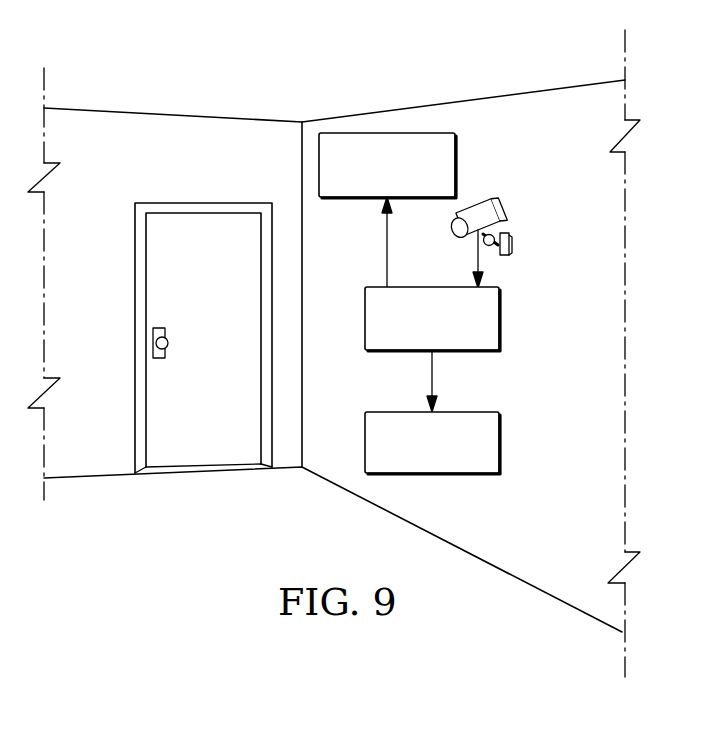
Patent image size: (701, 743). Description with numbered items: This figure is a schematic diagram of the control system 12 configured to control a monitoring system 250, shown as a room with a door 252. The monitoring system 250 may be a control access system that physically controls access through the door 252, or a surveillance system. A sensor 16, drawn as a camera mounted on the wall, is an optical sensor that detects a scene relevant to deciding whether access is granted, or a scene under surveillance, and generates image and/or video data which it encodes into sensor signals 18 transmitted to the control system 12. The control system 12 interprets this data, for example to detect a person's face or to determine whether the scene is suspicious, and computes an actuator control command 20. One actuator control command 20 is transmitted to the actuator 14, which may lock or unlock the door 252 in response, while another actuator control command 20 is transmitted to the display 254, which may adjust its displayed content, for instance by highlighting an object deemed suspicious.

The monitoring system 250 is at (492, 62).
The door 252 is at (234, 383).
The actuator 14 is at (457, 165).
The sensor 16 is at (504, 212).
The sensor signals 18 is at (476, 251).
The actuator control command 20 is at (385, 241).
The control system 12 is at (501, 320).
The display 254 is at (501, 445).